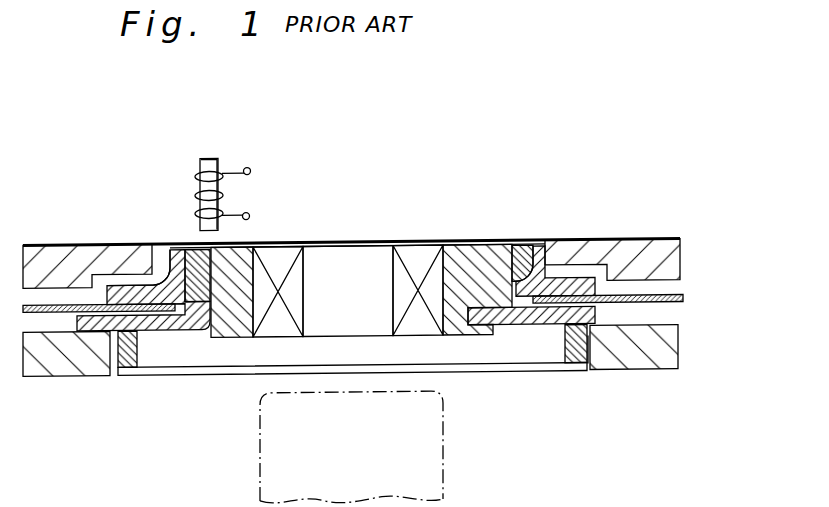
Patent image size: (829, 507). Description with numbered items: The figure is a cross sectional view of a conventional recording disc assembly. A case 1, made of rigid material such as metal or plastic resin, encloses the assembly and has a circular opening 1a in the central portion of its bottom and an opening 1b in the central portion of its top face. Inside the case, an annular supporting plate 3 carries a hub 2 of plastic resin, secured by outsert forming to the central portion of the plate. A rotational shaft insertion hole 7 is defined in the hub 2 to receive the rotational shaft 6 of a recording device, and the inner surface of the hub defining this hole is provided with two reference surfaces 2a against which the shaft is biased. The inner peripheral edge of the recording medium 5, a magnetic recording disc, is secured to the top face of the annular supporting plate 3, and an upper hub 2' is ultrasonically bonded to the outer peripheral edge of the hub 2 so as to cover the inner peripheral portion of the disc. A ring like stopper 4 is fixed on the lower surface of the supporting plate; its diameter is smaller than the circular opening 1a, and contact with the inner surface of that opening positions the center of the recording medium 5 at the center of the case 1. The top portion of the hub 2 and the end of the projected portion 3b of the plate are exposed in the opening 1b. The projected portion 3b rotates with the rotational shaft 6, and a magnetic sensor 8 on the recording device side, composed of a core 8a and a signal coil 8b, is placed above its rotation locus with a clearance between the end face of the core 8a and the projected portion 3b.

The case 1 is at (640, 248).
The circular opening 1a is at (582, 368).
The opening 1b is at (542, 247).
The hub 2 is at (361, 254).
The reference surfaces 2a is at (278, 258).
The upper hub 2' is at (368, 236).
The annular supporting plate 3 is at (173, 328).
The projected portion 3b is at (197, 245).
The ring like stopper 4 is at (555, 352).
The recording medium 5 is at (44, 303).
The rotational shaft 6 is at (442, 468).
The rotational shaft insertion hole 7 is at (348, 260).
The magnetic sensor 8 is at (219, 153).
The core 8a is at (202, 170).
The signal coil 8b is at (243, 164).